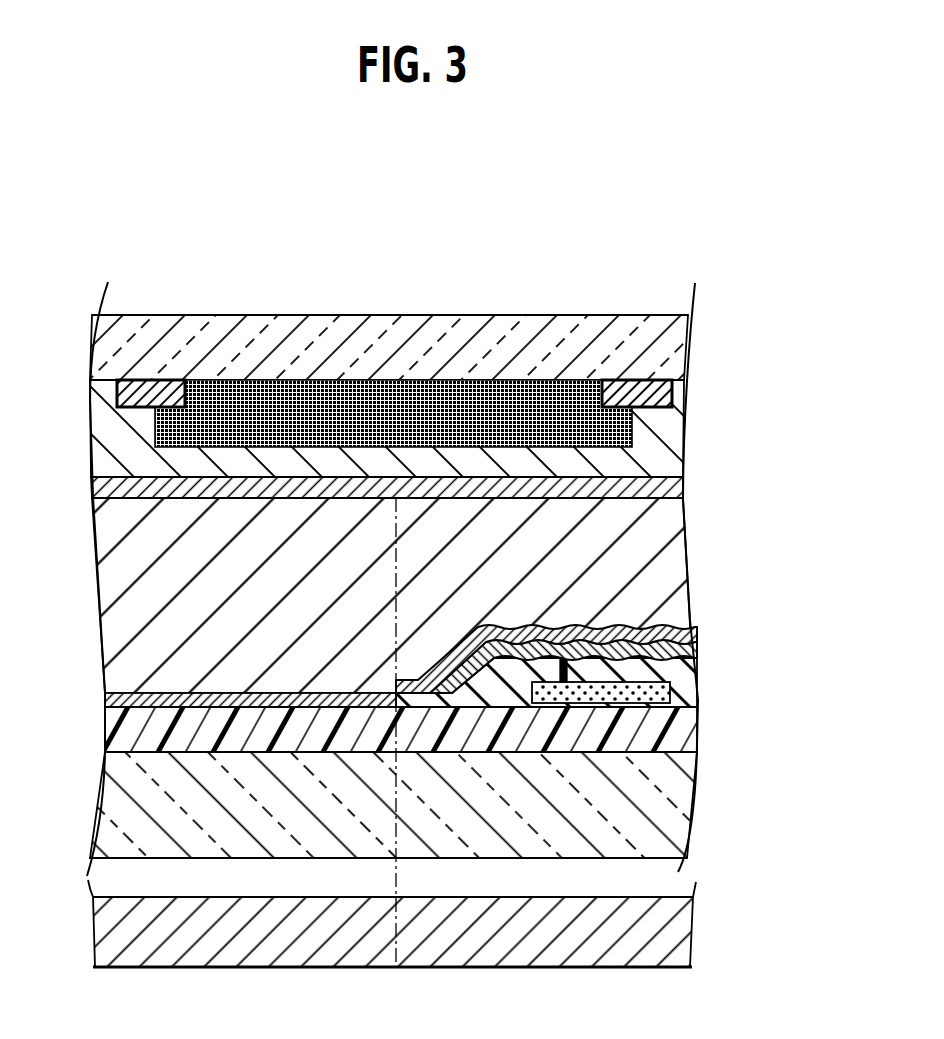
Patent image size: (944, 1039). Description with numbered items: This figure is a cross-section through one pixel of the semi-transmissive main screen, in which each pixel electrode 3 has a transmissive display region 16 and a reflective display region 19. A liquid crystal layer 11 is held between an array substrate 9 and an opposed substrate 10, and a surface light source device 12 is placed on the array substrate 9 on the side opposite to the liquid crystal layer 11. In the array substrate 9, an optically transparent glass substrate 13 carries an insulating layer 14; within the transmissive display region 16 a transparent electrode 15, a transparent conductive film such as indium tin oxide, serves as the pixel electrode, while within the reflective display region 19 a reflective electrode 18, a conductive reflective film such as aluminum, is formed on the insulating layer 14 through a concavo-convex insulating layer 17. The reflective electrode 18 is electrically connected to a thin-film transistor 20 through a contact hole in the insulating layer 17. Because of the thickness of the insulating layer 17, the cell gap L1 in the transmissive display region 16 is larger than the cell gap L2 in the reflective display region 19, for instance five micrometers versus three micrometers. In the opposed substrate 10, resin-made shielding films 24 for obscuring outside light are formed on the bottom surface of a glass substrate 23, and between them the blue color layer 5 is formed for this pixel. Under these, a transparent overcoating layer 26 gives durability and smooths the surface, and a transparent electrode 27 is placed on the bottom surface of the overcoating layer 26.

The pixel electrode 3 is at (475, 665).
The blue color layer 5 is at (640, 422).
The array substrate 9 is at (488, 743).
The opposed substrate 10 is at (481, 391).
The liquid crystal layer 11 is at (668, 570).
The surface light source device 12 is at (680, 920).
The glass substrate 13 is at (463, 807).
The insulating layer 14 is at (697, 730).
The transparent electrode 15 is at (697, 650).
The transmissive display region 16 is at (396, 972).
The concavo-convex insulating layer 17 is at (697, 682).
The reflective electrode 18 is at (697, 633).
The reflective display region 19 is at (690, 972).
The thin-film transistor 20 is at (697, 700).
The glass substrate 23 is at (683, 350).
The shielding film 24 is at (683, 383).
The overcoating layer 26 is at (672, 412).
The transparent electrode 27 is at (452, 473).
The cell gap L1 is at (88, 497).
The cell gap L2 is at (683, 497).